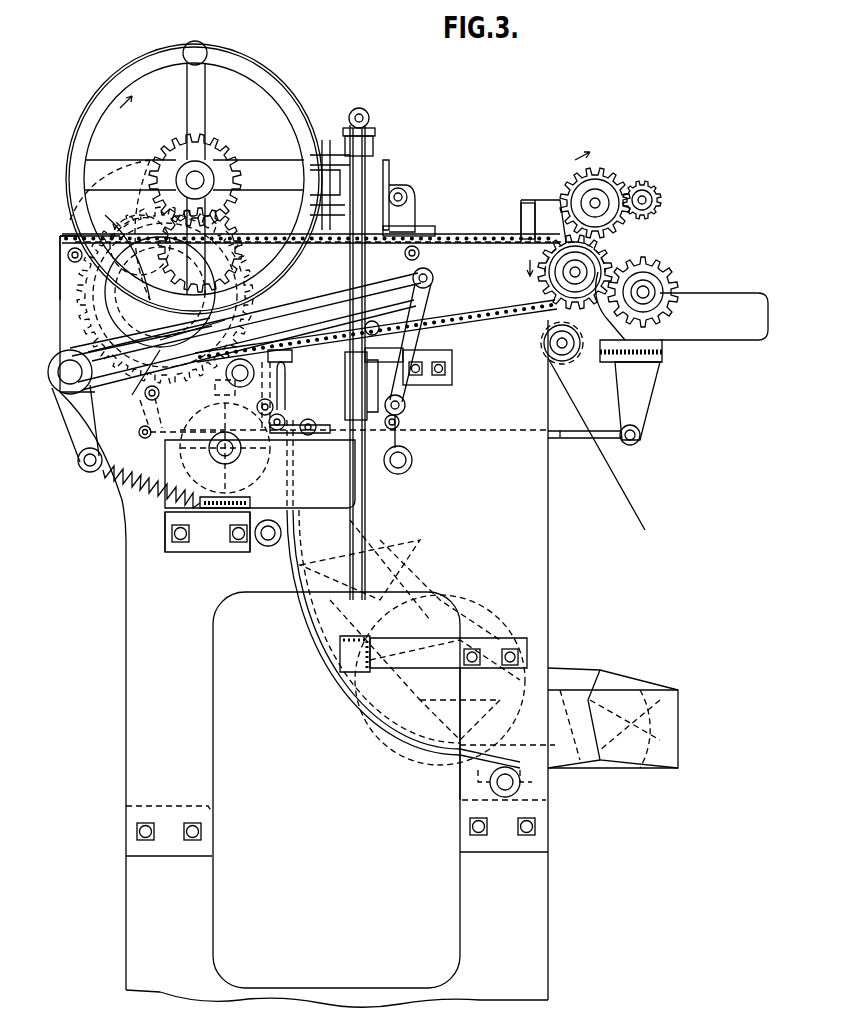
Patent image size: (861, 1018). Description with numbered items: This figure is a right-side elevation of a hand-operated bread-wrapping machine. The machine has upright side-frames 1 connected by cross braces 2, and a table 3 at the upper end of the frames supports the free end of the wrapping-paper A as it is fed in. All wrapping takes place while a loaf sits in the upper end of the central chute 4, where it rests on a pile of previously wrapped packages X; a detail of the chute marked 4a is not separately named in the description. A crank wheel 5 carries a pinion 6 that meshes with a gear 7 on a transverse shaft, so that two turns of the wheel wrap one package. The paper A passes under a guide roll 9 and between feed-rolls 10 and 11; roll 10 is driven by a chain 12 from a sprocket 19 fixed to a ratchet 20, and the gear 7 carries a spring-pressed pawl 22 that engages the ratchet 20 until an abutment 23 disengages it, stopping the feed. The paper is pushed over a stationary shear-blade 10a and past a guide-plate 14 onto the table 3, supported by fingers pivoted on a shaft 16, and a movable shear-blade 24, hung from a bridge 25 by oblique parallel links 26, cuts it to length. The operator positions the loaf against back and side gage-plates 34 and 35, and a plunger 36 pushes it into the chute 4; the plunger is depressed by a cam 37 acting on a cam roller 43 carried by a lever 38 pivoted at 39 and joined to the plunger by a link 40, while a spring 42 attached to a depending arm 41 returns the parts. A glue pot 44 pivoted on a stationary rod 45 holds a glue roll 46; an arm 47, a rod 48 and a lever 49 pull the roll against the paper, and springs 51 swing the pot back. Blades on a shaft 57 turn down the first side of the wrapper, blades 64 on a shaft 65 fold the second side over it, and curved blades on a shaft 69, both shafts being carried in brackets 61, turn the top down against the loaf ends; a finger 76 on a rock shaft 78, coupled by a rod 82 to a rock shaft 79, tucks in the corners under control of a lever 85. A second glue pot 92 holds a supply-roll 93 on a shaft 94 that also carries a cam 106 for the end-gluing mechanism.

The side-frame 1 is at (126, 586).
The cross brace 2 is at (182, 808).
The table 3 is at (72, 238).
The chute 4 is at (308, 627).
The inner guide 4a is at (395, 698).
The crank wheel 5 is at (305, 76).
The pinion 6 is at (226, 164).
The gear 7 is at (224, 246).
The guide roll 9 is at (568, 356).
The feed-roll 10 is at (545, 290).
The stationary shear-blade 10a is at (540, 262).
The feed-roll 11 is at (565, 186).
The chain 12 is at (470, 312).
The guide-plate 14 is at (470, 230).
The shaft 16 is at (420, 255).
The sprocket 19 is at (85, 332).
The ratchet 20 is at (65, 302).
The spring-pressed pawl 22 is at (170, 266).
The abutment 23 is at (66, 350).
The movable shear-blade 24 is at (526, 200).
The bridge 25 is at (540, 200).
The parallel links 26 is at (521, 218).
The back gage-plate 34 is at (390, 170).
The side gage-plate 35 is at (312, 162).
The plunger 36 is at (372, 130).
The cam 37 is at (105, 212).
The lever 38 is at (254, 317).
The pivot 39 is at (52, 384).
The link 40 is at (404, 352).
The depending arm 41 is at (77, 428).
The spring 42 is at (104, 478).
The cam roller 43 is at (144, 392).
The glue pot 44 is at (714, 316).
The stationary rod 45 is at (660, 200).
The glue roll 46 is at (668, 282).
The arm 47 is at (642, 396).
The rod 48 is at (560, 440).
The lever 49 is at (139, 414).
The springs 51 is at (648, 194).
The shaft 57 is at (295, 296).
The brackets 61 is at (292, 358).
The blades 64 is at (372, 334).
The shaft 65 is at (452, 360).
The shaft 69 is at (228, 383).
The finger 76 is at (286, 386).
The rock shaft 78 is at (284, 420).
The rock shaft 79 is at (400, 422).
The rod 82 is at (332, 418).
The lever 85 is at (68, 260).
The glue pot 92 is at (356, 491).
The glue roll 93 is at (225, 447).
The shaft 94 is at (218, 456).
The cam 106 is at (182, 422).
The wrapping-paper A is at (626, 478).
The package X is at (618, 666).